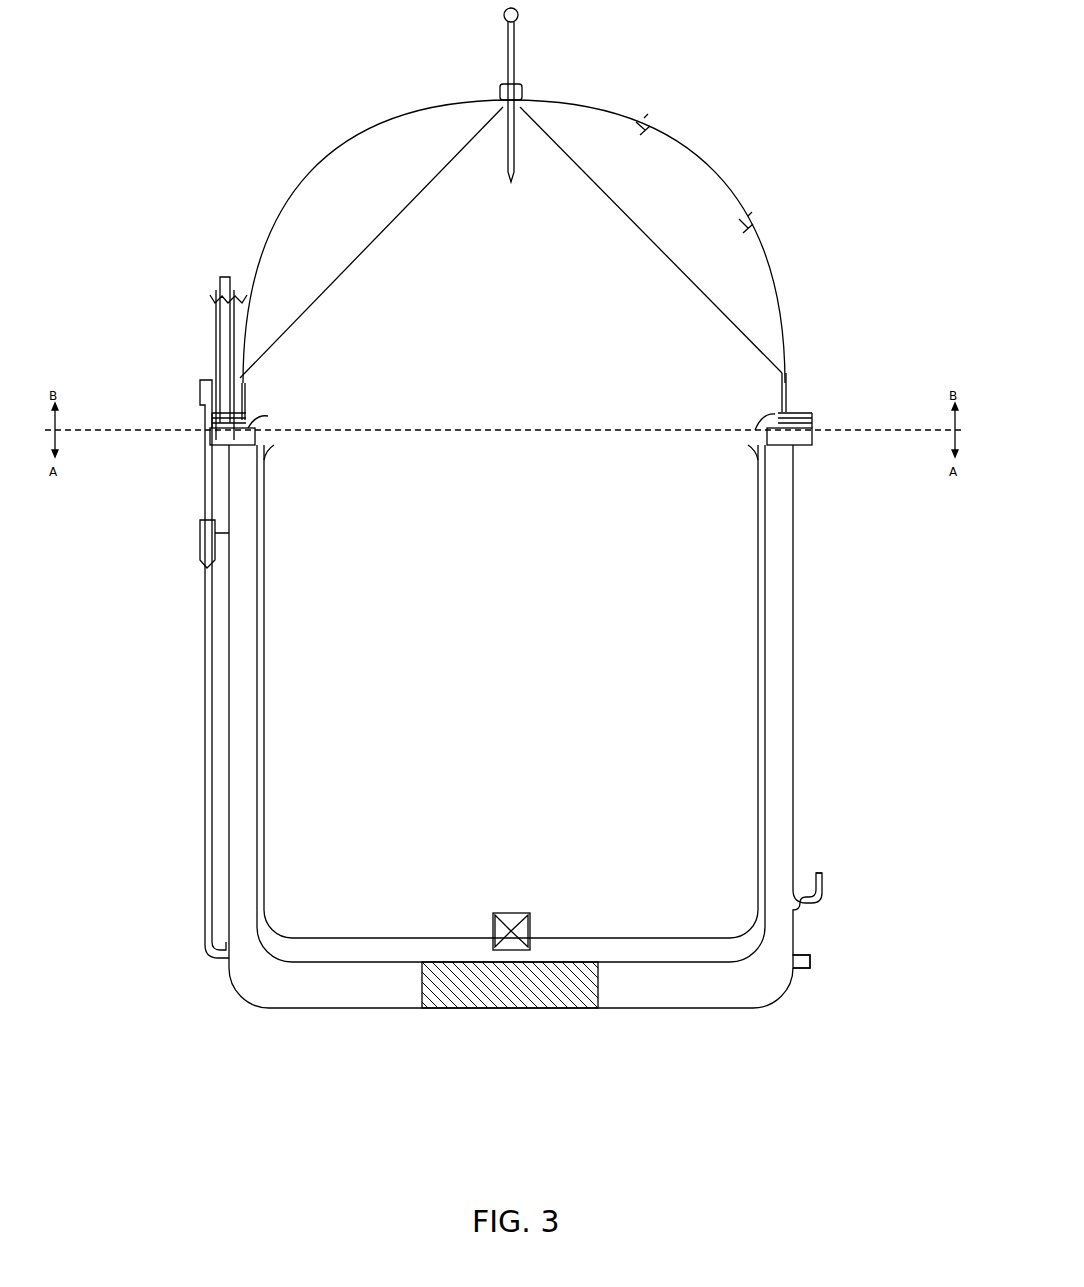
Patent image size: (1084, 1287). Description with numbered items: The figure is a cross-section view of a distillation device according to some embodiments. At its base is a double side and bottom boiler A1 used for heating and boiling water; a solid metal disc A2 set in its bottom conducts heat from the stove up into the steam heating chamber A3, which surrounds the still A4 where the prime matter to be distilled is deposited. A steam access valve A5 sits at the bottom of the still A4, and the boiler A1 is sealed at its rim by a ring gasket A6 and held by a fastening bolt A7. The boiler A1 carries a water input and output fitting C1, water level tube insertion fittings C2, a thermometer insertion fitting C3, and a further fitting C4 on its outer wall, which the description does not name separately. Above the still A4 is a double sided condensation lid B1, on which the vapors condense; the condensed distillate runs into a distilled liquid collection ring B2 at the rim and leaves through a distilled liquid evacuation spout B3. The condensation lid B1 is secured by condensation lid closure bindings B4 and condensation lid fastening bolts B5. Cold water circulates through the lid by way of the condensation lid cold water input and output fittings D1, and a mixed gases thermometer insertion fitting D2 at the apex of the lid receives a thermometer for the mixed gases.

The double side and bottom boiler A1 is at (525, 726).
The solid metal disc A2 is at (515, 990).
The steam heating chamber A3 is at (511, 703).
The still A4 is at (511, 691).
The steam access valve A5 is at (514, 906).
The ring gasket A6 is at (812, 437).
The fastening bolt A7 is at (229, 437).
The double sided condensation lid B1 is at (513, 260).
The distilled liquid collection ring B2 is at (212, 423).
The distilled liquid evacuation spout B3 is at (812, 413).
The condensation lid closure bindings B4 is at (228, 330).
The condensation lid fastening bolts B5 is at (212, 298).
The water input and output fitting C1 is at (812, 962).
The water level tube insertion fittings C2 is at (229, 540).
The thermometer insertion fitting C3 is at (200, 520).
The hook C4 is at (822, 878).
The condensation lid cold water input and output fittings D1 is at (650, 127).
The mixed gases thermometer insertion fitting D2 is at (514, 60).